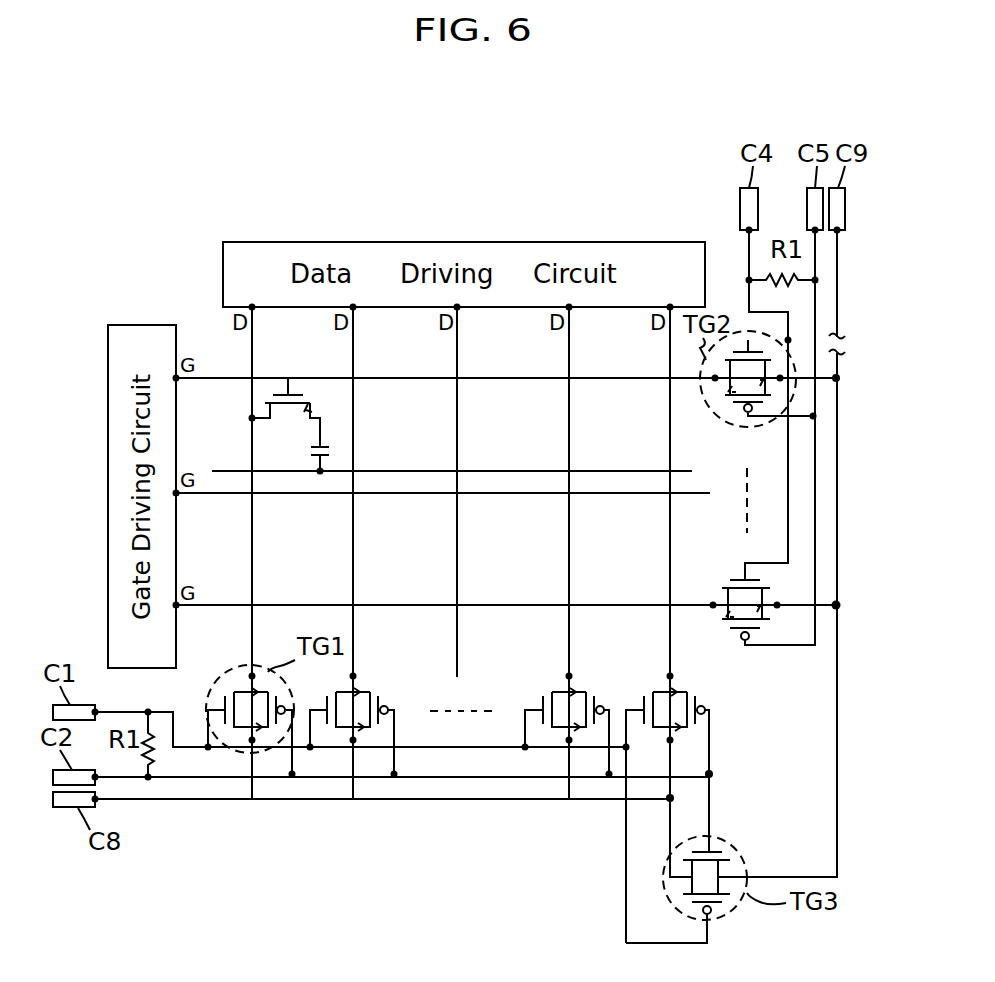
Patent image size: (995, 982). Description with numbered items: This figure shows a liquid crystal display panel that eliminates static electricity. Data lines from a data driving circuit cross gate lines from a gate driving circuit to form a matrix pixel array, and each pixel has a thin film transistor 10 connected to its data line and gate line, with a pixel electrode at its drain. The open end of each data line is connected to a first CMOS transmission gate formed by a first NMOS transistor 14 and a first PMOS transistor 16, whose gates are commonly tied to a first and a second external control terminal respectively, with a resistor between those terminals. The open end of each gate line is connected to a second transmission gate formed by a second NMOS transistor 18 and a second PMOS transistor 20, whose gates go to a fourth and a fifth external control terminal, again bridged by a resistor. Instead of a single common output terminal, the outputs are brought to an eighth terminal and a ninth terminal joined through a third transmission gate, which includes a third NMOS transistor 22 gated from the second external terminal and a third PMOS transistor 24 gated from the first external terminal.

The thin film transistor 10 is at (300, 392).
The first NMOS transistor 14 is at (212, 700).
The first PMOS transistor 16 is at (286, 704).
The second NMOS transistor 18 is at (758, 344).
The second PMOS transistor 20 is at (722, 456).
The third NMOS transistor 22 is at (715, 847).
The third PMOS transistor 24 is at (718, 913).